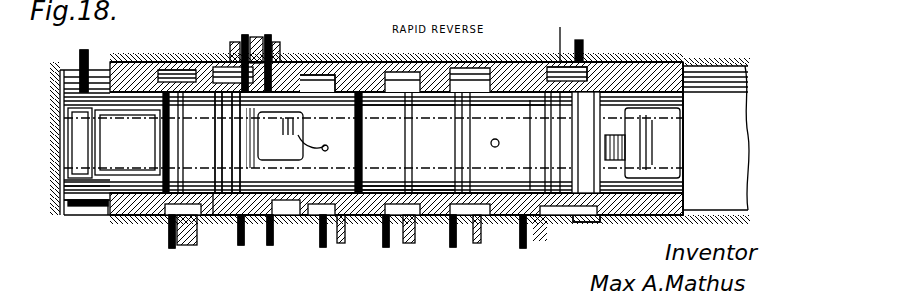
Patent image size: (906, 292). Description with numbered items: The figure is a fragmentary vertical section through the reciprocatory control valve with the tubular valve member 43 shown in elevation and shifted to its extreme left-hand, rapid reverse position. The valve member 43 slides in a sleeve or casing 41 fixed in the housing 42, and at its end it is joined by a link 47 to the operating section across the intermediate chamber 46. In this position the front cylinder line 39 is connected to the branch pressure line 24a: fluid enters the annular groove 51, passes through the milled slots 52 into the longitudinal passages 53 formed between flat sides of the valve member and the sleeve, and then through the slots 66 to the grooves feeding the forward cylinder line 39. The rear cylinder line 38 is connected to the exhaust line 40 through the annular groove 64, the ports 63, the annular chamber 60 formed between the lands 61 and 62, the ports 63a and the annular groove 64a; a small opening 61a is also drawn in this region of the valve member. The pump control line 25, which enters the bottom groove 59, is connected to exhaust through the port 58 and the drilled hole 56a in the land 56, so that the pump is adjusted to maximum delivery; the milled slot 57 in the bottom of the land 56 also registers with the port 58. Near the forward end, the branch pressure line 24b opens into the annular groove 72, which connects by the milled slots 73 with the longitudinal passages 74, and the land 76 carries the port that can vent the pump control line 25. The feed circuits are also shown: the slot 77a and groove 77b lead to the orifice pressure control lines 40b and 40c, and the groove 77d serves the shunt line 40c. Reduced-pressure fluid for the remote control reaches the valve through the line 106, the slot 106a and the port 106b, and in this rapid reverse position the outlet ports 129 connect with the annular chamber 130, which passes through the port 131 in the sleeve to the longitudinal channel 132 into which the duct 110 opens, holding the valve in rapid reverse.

The longitudinal passages 74 is at (92, 137).
The land 76 is at (158, 138).
The valve member 43 is at (88, 205).
The annular groove 72 is at (152, 60).
The milled slots 73 is at (180, 62).
The land 56 is at (238, 70).
The groove 77d is at (236, 62).
The orifice pressure control line 40c is at (246, 36).
The orifice pressure control line 40b is at (270, 36).
The groove 77b is at (278, 62).
The longitudinal passages 53 is at (276, 109).
The milled slots 52 is at (334, 62).
The annular chamber 60 is at (446, 62).
The annular chamber 130 is at (556, 75).
The slot 106a is at (569, 38).
The line 106 is at (584, 46).
The port 106b is at (590, 62).
The slot 77a is at (250, 96).
The milled slots 66 is at (242, 134).
The milled slot 57 is at (240, 178).
The port 58 is at (262, 185).
The land 61 is at (378, 117).
The land 62 is at (456, 110).
The ports 63 is at (394, 186).
The ports 63a is at (450, 172).
The orifice 61a is at (478, 228).
The outlet ports 129 is at (499, 143).
The port 131 is at (572, 158).
The link 47 is at (660, 132).
The intermediate chamber 46 is at (750, 140).
The sleeve or casing 41 is at (684, 198).
The housing 42 is at (650, 222).
The longitudinal channel 132 is at (590, 222).
The branch pressure line 24b is at (168, 248).
The drilled hole 56a is at (222, 215).
The groove 59 is at (232, 208).
The pump control line 25 is at (240, 246).
The forward cylinder line 39 is at (270, 246).
The branch pressure line 24a is at (322, 248).
The annular groove 51 is at (344, 224).
The rear cylinder line 38 is at (386, 248).
The annular groove 64 is at (410, 224).
The exhaust line 40 is at (453, 248).
The annular groove 64a is at (495, 121).
The duct 110 is at (526, 248).